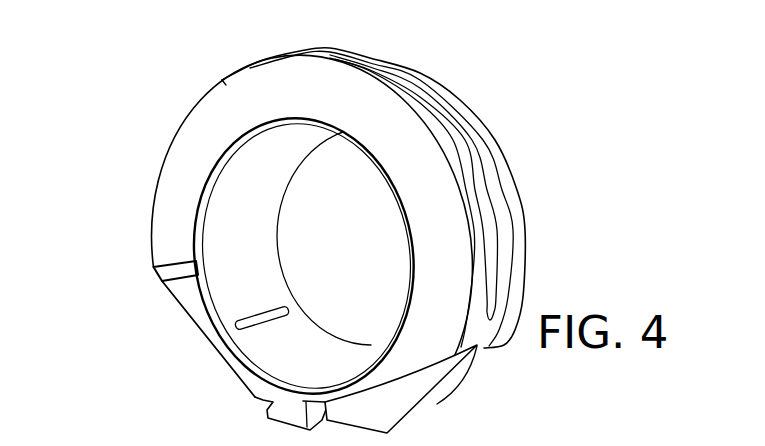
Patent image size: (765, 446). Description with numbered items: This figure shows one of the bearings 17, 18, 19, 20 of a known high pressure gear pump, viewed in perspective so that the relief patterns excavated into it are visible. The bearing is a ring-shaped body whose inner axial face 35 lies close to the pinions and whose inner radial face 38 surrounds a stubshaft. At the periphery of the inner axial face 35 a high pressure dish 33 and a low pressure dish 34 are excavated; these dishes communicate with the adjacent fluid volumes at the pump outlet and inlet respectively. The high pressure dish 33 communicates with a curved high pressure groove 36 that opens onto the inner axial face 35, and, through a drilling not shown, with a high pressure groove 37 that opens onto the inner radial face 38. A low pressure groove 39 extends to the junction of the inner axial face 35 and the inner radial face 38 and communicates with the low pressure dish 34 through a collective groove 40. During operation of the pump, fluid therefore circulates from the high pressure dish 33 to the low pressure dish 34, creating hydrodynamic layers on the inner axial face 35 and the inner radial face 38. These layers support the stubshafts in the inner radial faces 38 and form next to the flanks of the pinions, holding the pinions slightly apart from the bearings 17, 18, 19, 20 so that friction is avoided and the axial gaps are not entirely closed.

The bearing 17 is at (438, 192).
The bearing 18 is at (405, 203).
The bearing 19 is at (414, 187).
The bearing 20 is at (465, 111).
The high pressure dish 33 is at (396, 410).
The low pressure dish 34 is at (237, 377).
The inner axial face 35 is at (220, 112).
The curved high pressure groove 36 is at (221, 81).
The high pressure groove 37 is at (240, 322).
The inner radial face 38 is at (245, 172).
The low pressure groove 39 is at (200, 213).
The collective groove 40 is at (167, 270).